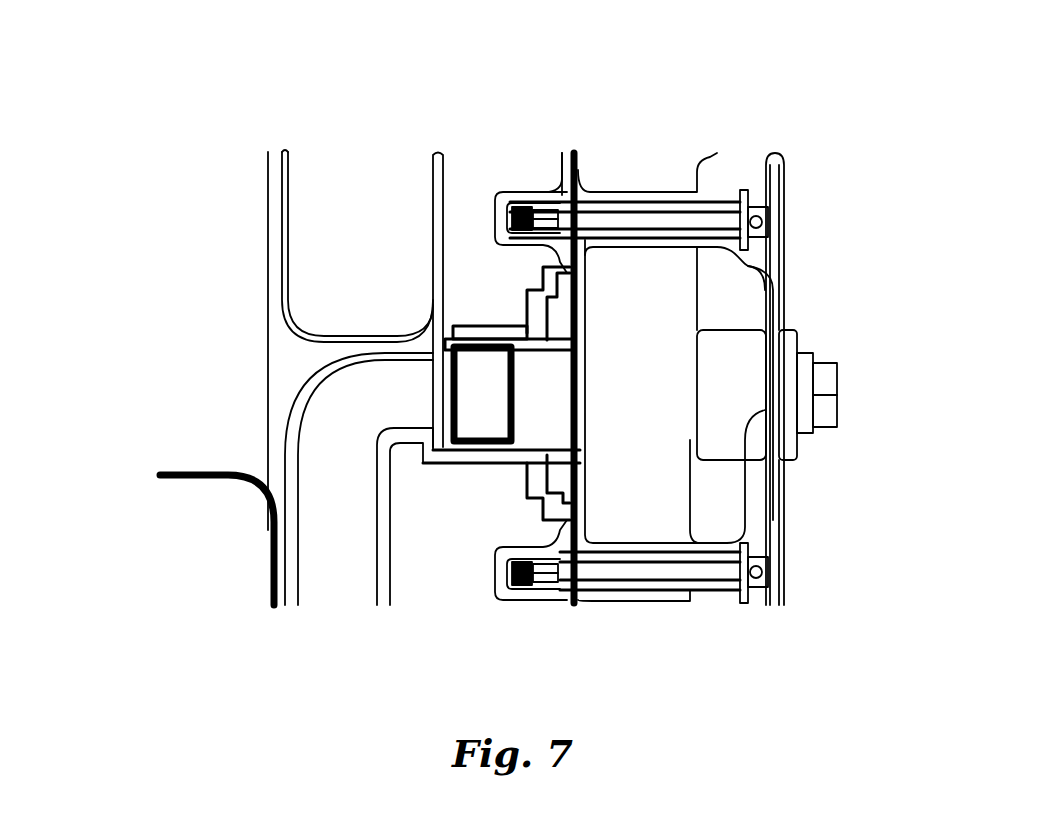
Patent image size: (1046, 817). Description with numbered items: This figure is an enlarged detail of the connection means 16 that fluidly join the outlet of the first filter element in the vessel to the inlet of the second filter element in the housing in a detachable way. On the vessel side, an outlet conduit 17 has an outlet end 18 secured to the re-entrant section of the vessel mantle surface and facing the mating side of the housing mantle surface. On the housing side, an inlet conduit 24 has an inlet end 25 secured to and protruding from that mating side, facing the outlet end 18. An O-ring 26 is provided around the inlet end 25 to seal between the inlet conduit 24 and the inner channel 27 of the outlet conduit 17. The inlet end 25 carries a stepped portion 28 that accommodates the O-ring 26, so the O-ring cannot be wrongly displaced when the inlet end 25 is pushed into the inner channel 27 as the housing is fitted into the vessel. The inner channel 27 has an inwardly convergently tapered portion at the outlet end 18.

The connection means 16 is at (514, 525).
The outlet conduit 17 is at (297, 410).
The outlet end 18 is at (468, 300).
The inlet conduit 24 is at (550, 445).
The inlet end 25 is at (476, 470).
The O-ring 26 is at (512, 322).
The inner channel 27 is at (445, 305).
The stepped portion 28 is at (484, 352).